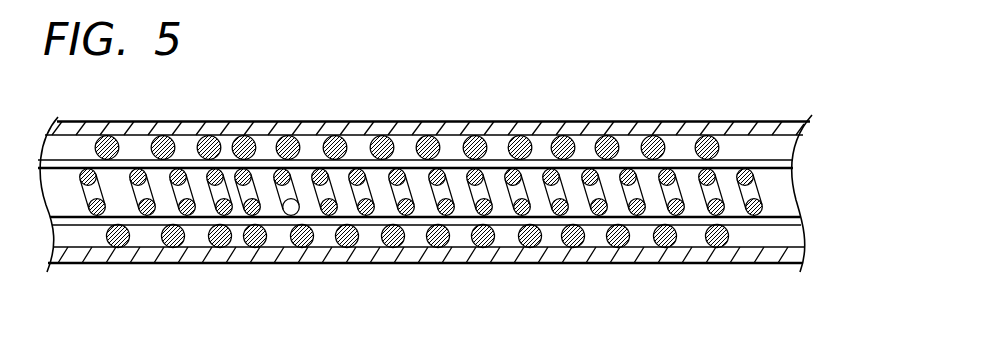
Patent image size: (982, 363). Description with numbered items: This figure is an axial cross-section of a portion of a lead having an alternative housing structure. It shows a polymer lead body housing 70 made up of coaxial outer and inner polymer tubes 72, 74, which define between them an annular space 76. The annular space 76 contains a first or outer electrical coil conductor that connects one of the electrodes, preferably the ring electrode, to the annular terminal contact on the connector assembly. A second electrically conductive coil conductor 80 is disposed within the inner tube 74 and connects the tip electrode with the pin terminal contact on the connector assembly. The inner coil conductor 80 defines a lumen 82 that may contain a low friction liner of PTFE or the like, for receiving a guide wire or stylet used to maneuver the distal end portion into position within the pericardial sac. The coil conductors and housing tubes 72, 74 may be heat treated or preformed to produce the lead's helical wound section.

The polymer lead body housing 70 is at (593, 100).
The outer polymer tube 72 is at (683, 121).
The inner polymer tube 74 is at (782, 160).
The annular space 76 is at (253, 140).
The second electrically conductive coil conductor 80 is at (334, 190).
The lumen 82 is at (452, 181).